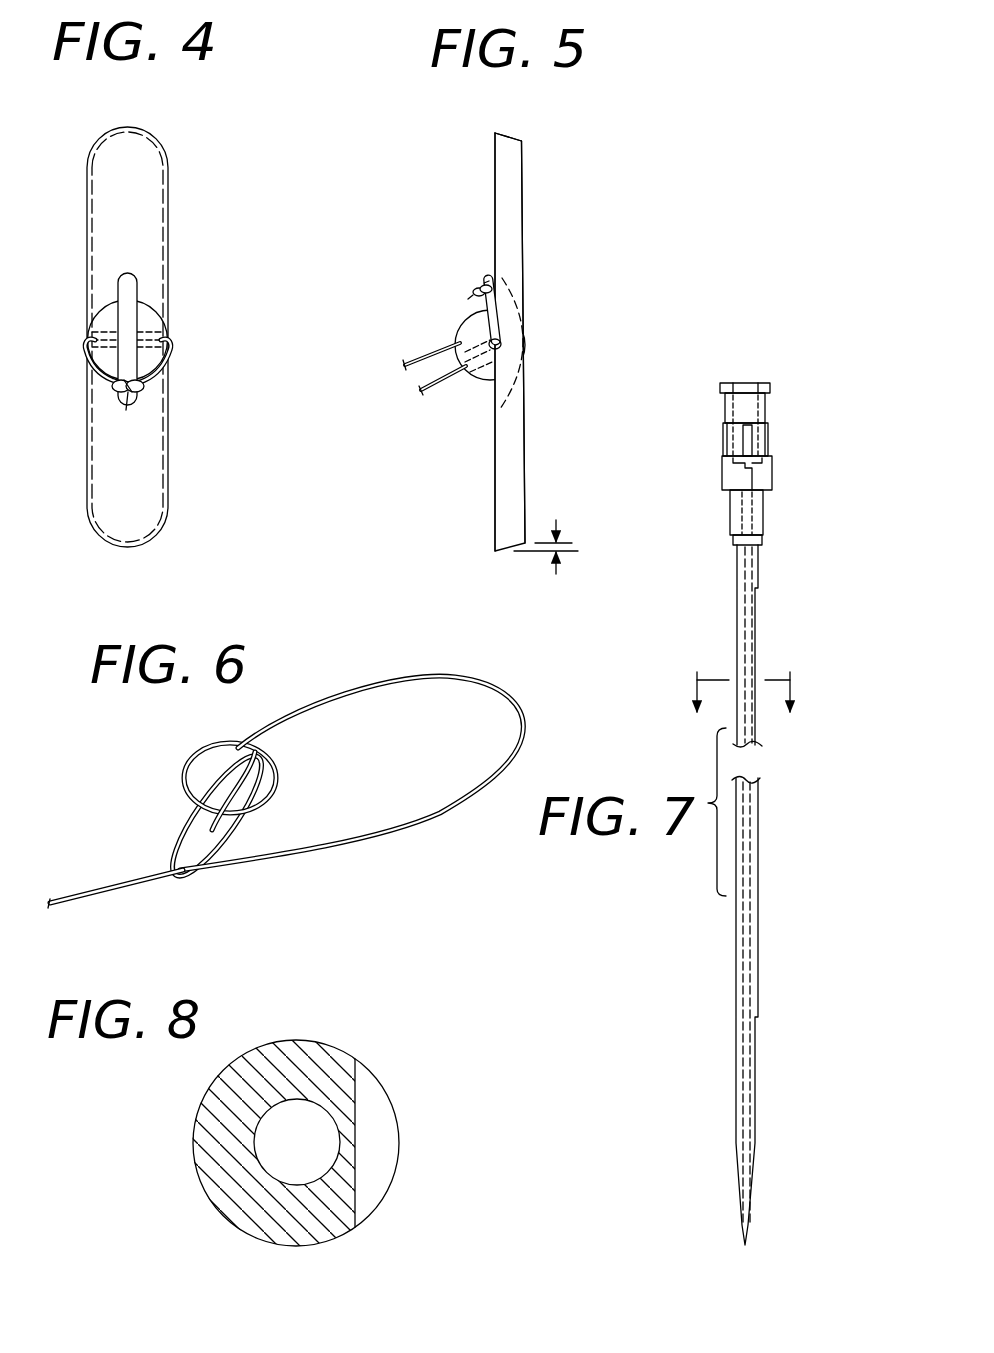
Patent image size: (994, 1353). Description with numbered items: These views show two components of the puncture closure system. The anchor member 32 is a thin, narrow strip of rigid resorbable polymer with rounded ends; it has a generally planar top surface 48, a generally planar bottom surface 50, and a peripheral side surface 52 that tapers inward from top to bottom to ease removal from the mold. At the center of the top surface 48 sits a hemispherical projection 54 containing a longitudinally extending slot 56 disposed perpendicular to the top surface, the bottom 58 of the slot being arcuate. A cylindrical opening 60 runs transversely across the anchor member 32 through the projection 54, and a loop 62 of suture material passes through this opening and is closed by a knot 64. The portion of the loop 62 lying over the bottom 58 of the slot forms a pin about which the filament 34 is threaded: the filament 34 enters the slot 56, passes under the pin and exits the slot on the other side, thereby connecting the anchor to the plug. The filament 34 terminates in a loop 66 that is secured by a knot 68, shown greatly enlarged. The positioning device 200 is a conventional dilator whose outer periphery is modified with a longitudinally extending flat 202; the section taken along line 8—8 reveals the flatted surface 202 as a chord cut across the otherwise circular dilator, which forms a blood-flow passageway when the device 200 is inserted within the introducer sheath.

In FIG. 4, the anchor member 32 is at (141, 206).
In FIG. 5, the anchor member 32 is at (522, 217).
In FIG. 5, the filament 34 is at (409, 361).
In FIG. 6, the filament 34 is at (115, 888).
In FIG. 4, the top surface 48 is at (150, 447).
In FIG. 5, the top surface 48 is at (492, 190).
In FIG. 5, the bottom surface 50 is at (525, 171).
In FIG. 5, the peripheral side surface 52 is at (518, 136).
In FIG. 4, the hemispherical projection 54 is at (144, 319).
In FIG. 5, the hemispherical projection 54 is at (462, 318).
In FIG. 4, the slot 56 is at (116, 310).
In FIG. 5, the slot 56 is at (497, 320).
In FIG. 5, the bottom of the slot 58 is at (520, 332).
In FIG. 4, the cylindrical opening 60 is at (164, 348).
In FIG. 5, the cylindrical opening 60 is at (499, 351).
In FIG. 4, the loop 62 is at (164, 375).
In FIG. 5, the loop 62 is at (497, 338).
In FIG. 4, the knot 64 is at (121, 399).
In FIG. 5, the knot 64 is at (483, 287).
In FIG. 6, the loop 66 is at (380, 833).
In FIG. 6, the knot 68 is at (177, 822).
In FIG. 7, the positioning device 200 is at (772, 538).
In FIG. 8, the positioning device 200 is at (332, 1043).
In FIG. 7, the flat 202 is at (757, 824).
In FIG. 8, the flat 202 is at (357, 1128).
In FIG. 7, the section line 8— 8 is at (743, 712).